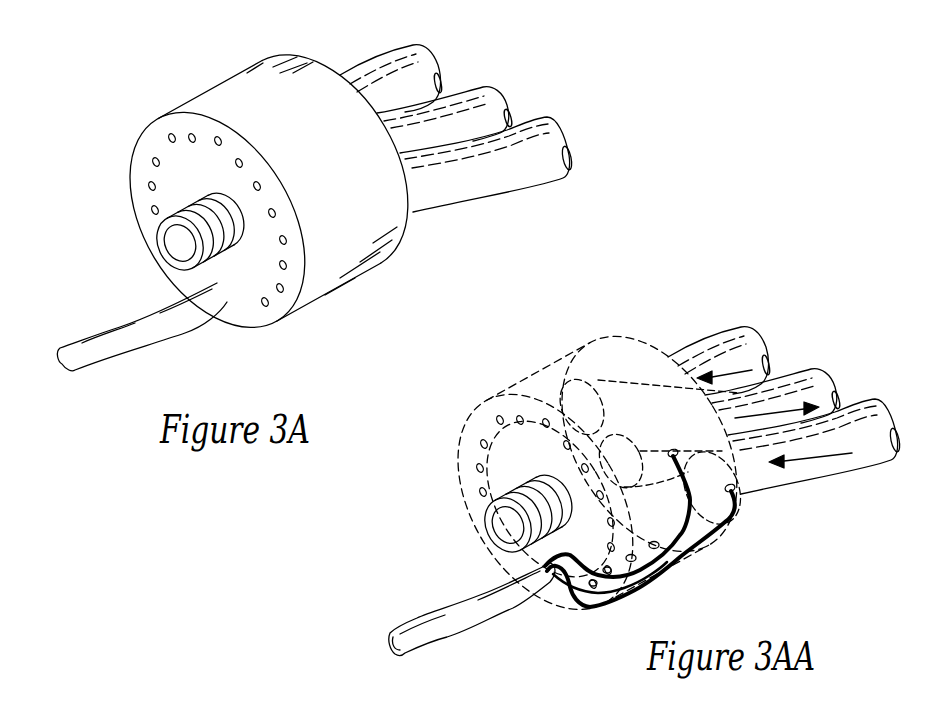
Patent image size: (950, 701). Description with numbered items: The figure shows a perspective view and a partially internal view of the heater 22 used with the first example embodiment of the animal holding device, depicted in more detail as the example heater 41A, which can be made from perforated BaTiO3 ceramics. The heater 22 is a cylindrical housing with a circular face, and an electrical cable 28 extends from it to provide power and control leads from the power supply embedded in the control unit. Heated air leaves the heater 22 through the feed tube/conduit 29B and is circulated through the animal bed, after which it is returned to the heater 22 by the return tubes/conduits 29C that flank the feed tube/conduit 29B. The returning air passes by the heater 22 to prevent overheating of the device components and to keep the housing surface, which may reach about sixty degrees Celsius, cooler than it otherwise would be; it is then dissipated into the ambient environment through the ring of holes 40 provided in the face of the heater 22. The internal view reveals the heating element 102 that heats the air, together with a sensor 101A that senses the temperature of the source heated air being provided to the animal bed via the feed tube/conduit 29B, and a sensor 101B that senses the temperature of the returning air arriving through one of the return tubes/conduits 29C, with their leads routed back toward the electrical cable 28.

In FIG. 3A, the heater 22 is at (84, 70).
In FIG. 3A, the electrical cable 28 is at (150, 312).
In FIG. 3AA, the electrical cable 28 is at (472, 609).
In FIG. 3A, the feed tube/conduit 29B is at (163, 240).
In FIG. 3AA, the feed tube/conduit 29B is at (665, 439).
In FIG. 3A, the return tube(s)/conduit(s) 29C is at (352, 70).
In FIG. 3AA, the return tube(s)/conduit(s) 29C is at (799, 390).
In FIG. 3A, the holes 40 is at (190, 132).
In FIG. 3AA, the holes 40 is at (545, 502).
In FIG. 3A, the example heater 41A is at (357, 289).
In FIG. 3AA, the sensor 101A is at (673, 449).
In FIG. 3AA, the sensor 101B is at (734, 491).
In FIG. 3AA, the heating element 102 is at (627, 443).